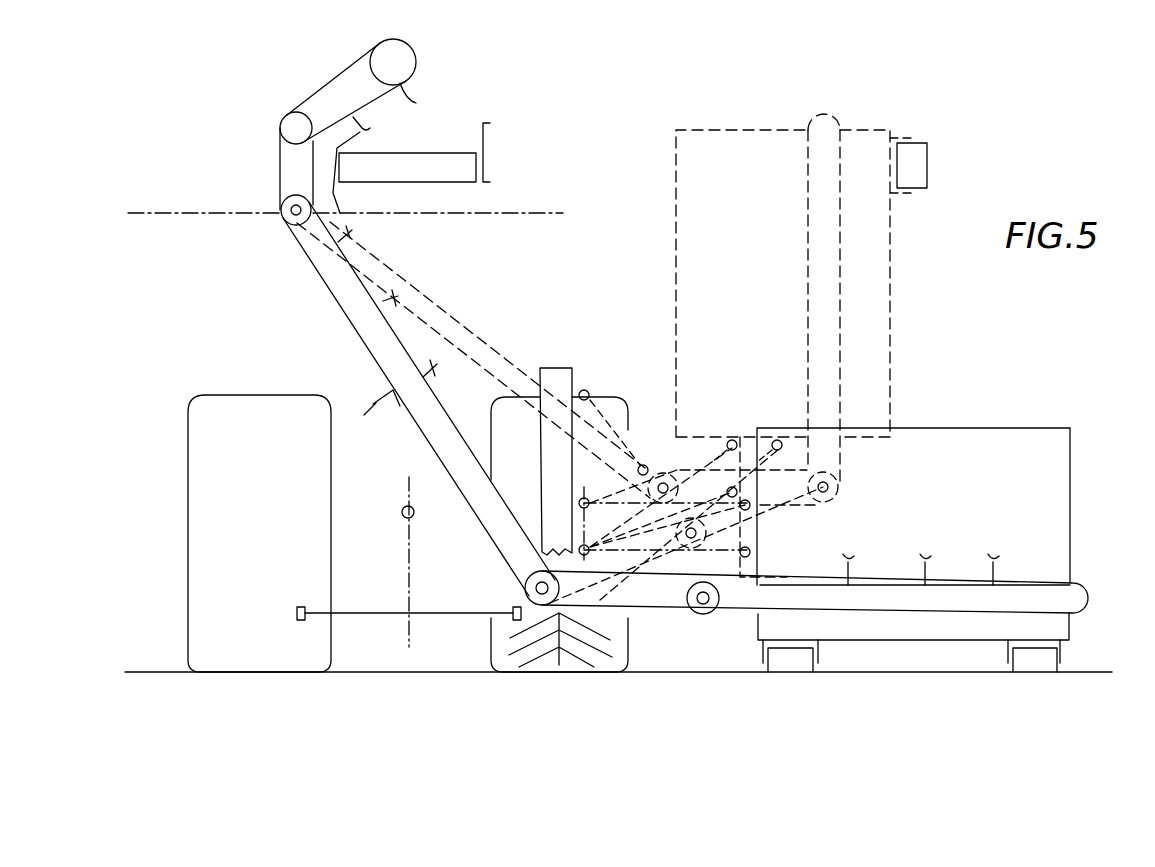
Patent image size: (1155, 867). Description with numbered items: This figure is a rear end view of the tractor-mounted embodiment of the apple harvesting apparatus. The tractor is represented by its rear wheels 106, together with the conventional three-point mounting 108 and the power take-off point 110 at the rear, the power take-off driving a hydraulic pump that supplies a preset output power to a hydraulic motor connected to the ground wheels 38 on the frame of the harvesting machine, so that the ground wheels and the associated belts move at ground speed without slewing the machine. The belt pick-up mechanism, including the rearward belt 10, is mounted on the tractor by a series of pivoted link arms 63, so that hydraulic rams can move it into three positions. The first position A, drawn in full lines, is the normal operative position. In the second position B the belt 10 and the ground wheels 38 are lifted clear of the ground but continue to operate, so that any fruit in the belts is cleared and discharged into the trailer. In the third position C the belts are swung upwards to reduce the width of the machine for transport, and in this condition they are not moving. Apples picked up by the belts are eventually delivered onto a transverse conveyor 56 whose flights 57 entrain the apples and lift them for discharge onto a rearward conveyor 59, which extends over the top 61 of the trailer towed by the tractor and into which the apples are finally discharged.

The rearward belt 10 is at (1088, 564).
The ground wheels 38 is at (793, 655).
The transverse conveyor 56 is at (1023, 583).
The flights 57 is at (927, 562).
The rearward conveyor 59 is at (429, 152).
The top of trailer 61 is at (503, 213).
The pivoted link arms 63 is at (708, 480).
The rear wheels 106 is at (208, 456).
The three-point mounting 108 is at (325, 600).
The power take-off point 110 is at (391, 516).
The first position A is at (1089, 479).
The second position B is at (774, 573).
The third position C is at (912, 340).